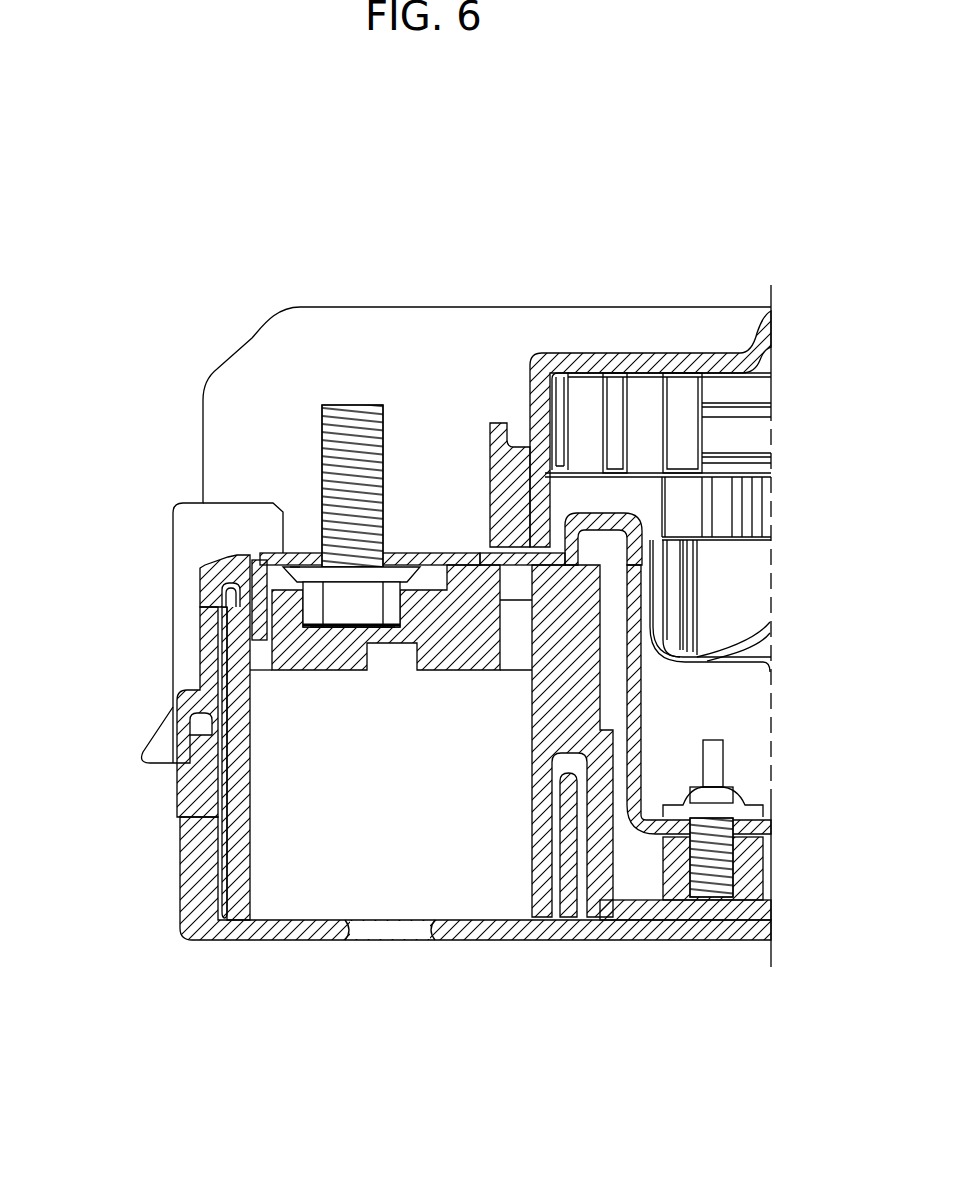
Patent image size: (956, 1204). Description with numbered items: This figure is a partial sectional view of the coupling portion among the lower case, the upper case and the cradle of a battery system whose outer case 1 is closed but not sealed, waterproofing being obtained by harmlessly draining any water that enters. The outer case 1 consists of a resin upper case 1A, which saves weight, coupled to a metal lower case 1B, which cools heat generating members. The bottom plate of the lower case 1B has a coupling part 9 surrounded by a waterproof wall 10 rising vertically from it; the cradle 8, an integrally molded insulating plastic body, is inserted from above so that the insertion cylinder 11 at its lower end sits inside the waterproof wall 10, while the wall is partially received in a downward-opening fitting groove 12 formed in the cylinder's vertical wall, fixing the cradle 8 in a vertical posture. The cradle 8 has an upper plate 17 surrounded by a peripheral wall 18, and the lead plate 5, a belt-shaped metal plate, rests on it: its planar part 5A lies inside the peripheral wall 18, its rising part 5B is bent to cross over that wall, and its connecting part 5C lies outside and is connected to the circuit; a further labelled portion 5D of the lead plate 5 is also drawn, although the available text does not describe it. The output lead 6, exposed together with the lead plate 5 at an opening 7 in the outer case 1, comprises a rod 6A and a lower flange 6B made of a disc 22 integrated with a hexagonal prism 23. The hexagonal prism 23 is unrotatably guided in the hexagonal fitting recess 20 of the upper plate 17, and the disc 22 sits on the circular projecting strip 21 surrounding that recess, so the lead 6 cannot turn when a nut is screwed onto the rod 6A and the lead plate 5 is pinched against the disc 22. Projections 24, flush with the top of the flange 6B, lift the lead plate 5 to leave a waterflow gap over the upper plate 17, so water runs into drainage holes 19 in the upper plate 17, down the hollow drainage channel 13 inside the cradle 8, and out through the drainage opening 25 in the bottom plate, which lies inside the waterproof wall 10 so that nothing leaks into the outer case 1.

The outer case 1 is at (397, 747).
The upper case 1A is at (205, 660).
The lower case 1B is at (419, 878).
The lead plate 5 is at (474, 446).
The planar part 5A is at (449, 548).
The rising part 5B is at (590, 509).
The connecting part 5C is at (734, 476).
The third portion of busbar 5D is at (287, 553).
The output lead 6 is at (365, 382).
The rod 6A is at (342, 450).
The flange 6B is at (371, 409).
The opening 7 is at (285, 501).
The cradle 8 is at (515, 826).
The coupling part 9 is at (515, 903).
The waterproof wall 10 is at (571, 862).
The insertion cylinder 11 is at (542, 810).
The fitting groove 12 is at (557, 837).
The drainage channel 13 is at (310, 847).
The upper plate 17 is at (457, 578).
The peripheral wall 18 is at (210, 595).
The drainage holes 19 is at (513, 665).
The fitting recess 20 is at (327, 630).
The projecting strip 21 is at (297, 566).
The disc 22 is at (393, 600).
The hexagonal prism 23 is at (425, 573).
The projections 24 is at (483, 548).
The drainage opening 25 is at (373, 931).